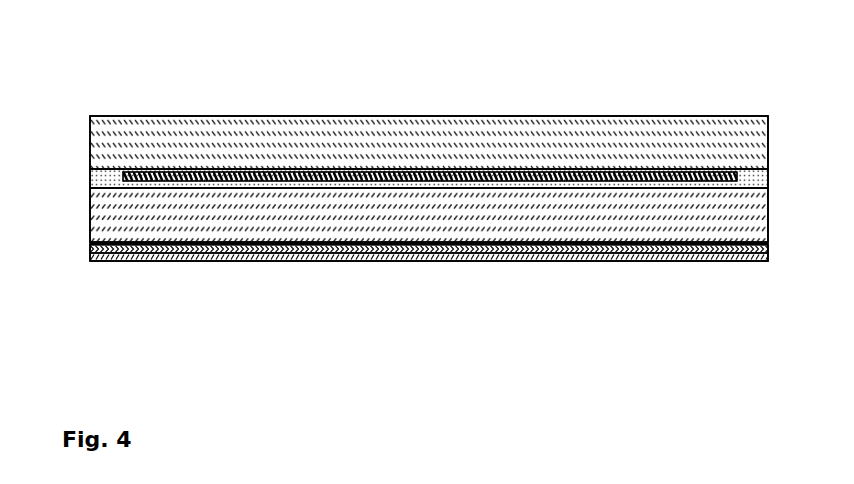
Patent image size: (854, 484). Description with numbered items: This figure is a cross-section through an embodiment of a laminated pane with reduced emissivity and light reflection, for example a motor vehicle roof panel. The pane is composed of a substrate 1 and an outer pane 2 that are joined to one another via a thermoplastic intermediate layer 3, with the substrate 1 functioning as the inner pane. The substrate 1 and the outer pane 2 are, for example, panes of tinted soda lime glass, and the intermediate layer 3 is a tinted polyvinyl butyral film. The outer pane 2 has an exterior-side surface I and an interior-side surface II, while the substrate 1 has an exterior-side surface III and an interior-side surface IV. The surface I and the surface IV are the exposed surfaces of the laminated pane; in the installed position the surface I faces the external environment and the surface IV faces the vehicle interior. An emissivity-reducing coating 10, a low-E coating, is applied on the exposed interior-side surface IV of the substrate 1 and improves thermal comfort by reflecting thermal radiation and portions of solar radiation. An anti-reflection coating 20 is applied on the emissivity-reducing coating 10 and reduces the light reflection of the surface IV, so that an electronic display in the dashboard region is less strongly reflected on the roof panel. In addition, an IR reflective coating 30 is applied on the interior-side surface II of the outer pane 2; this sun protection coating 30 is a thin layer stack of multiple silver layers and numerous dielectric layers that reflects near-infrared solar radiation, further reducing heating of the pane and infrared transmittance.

The substrate 1 is at (173, 219).
The outer pane 2 is at (457, 133).
The thermoplastic intermediate layer 3 is at (105, 177).
The emissivity-reducing coating 10 is at (483, 243).
The anti-reflection coating 20 is at (580, 256).
The IR reflective coating 30 is at (593, 176).
The exterior-side surface I is at (175, 104).
The interior-side surface II is at (255, 158).
The exterior-side surface III is at (225, 202).
The interior-side surface IV is at (295, 254).